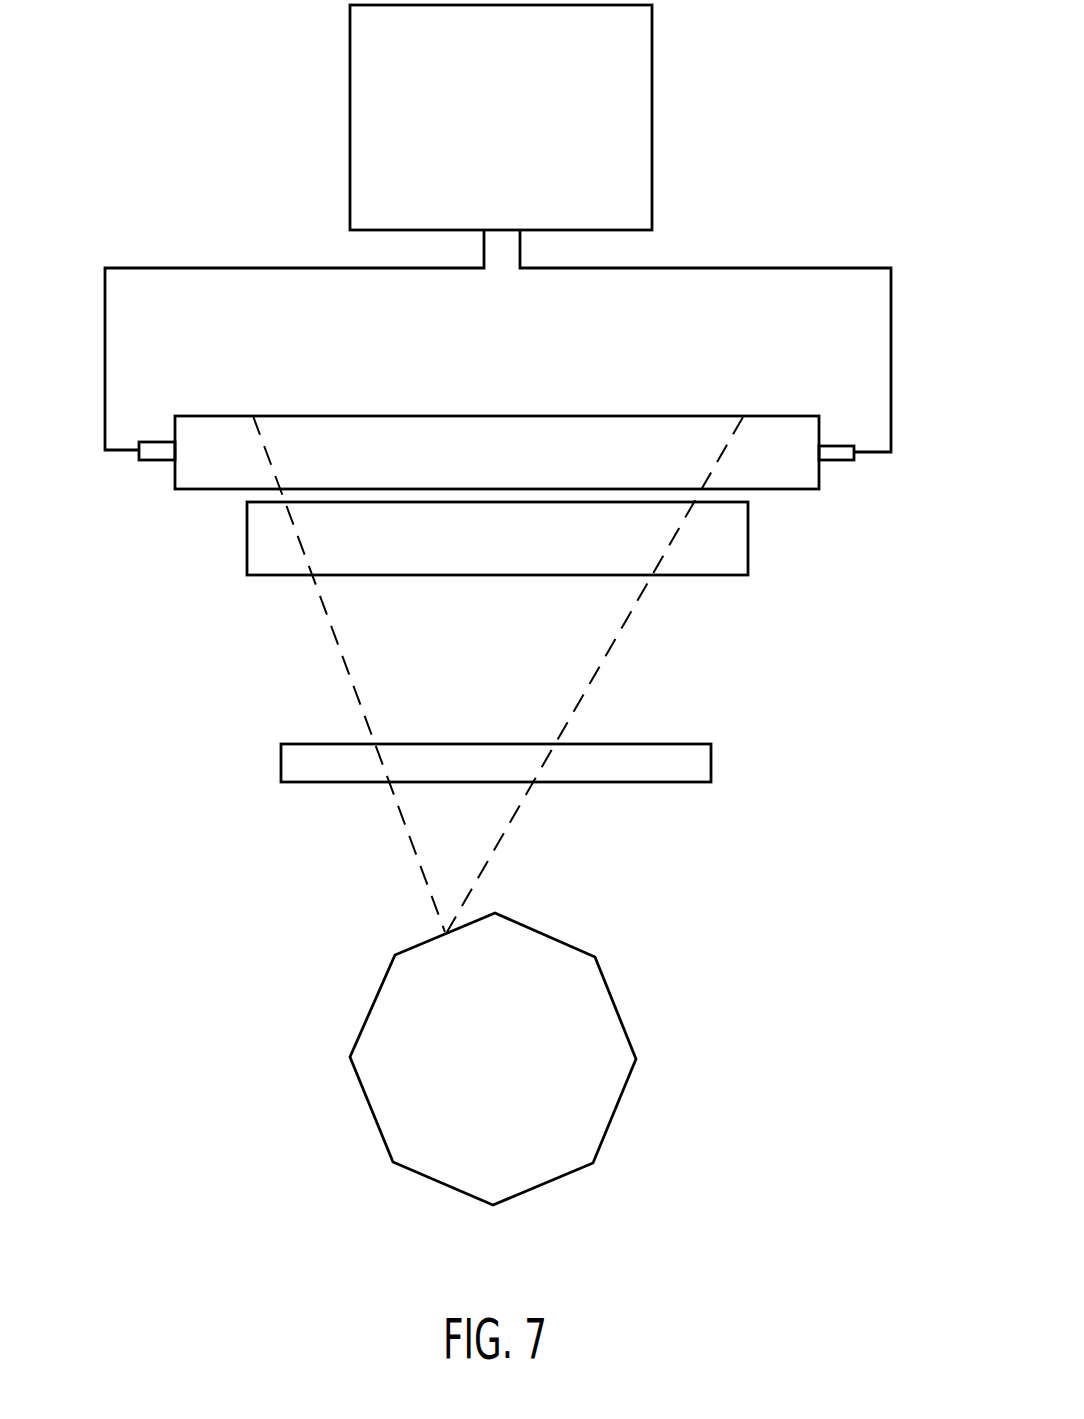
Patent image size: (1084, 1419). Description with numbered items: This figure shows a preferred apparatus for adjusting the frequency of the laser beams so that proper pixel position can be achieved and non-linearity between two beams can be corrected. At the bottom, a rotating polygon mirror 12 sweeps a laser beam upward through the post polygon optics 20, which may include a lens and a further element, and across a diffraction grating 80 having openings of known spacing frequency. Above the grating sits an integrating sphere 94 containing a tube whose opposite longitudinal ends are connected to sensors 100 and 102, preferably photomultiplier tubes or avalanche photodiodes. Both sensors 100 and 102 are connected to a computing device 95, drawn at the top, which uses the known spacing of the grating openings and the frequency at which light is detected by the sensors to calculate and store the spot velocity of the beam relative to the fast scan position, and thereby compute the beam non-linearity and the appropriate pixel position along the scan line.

The computing device 95 is at (350, 80).
The integrating sphere 94 is at (216, 490).
The sensor 100 is at (161, 462).
The sensor 102 is at (838, 462).
The diffraction grating 80 is at (750, 550).
The post polygon optics 20 is at (712, 760).
The rotating polygon mirror 12 is at (603, 972).